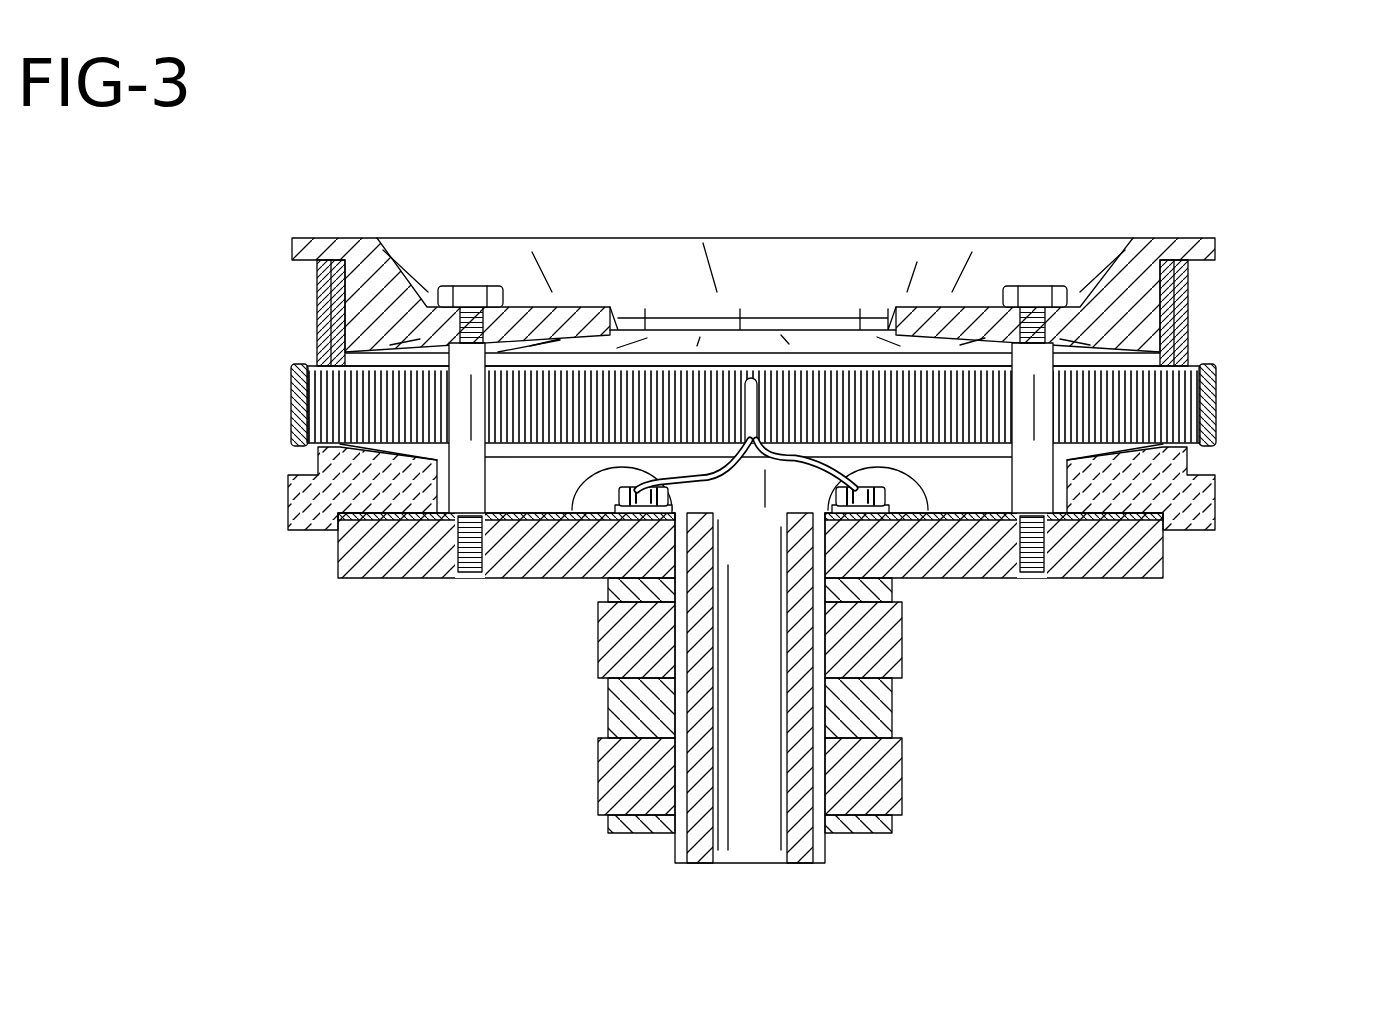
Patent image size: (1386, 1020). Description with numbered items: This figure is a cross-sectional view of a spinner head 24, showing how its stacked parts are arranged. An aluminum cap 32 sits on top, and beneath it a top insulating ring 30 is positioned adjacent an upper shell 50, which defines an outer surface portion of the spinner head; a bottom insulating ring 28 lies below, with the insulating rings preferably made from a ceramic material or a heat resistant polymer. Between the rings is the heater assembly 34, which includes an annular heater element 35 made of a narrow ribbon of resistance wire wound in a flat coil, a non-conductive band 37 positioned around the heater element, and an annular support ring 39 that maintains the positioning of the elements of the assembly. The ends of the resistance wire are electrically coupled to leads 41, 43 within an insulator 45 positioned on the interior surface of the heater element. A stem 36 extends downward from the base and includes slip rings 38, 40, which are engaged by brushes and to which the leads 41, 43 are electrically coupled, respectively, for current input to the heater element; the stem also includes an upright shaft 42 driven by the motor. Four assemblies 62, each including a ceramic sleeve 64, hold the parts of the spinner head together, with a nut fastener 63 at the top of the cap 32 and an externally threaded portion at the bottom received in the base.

The spinner head 24 is at (1139, 232).
The bottom insulating ring 28 is at (288, 512).
The top insulating ring 30 is at (320, 293).
The aluminum cap 32 is at (337, 238).
The heater assembly 34 is at (1220, 431).
The heater element 35 is at (378, 358).
The stem 36 is at (899, 713).
The non-conductive band 37 is at (297, 423).
The slip ring 38 is at (905, 650).
The annular support ring 39 is at (293, 372).
The slip ring 40 is at (905, 772).
The heater element lead 41 is at (928, 500).
The upright shaft 42 is at (757, 727).
The heater element lead 43 is at (580, 498).
The insulator 45 is at (752, 372).
The upper shell 50 is at (1190, 292).
The assembly 62 is at (466, 282).
The nut fastener 63 is at (490, 335).
The ceramic sleeve 64 is at (520, 353).